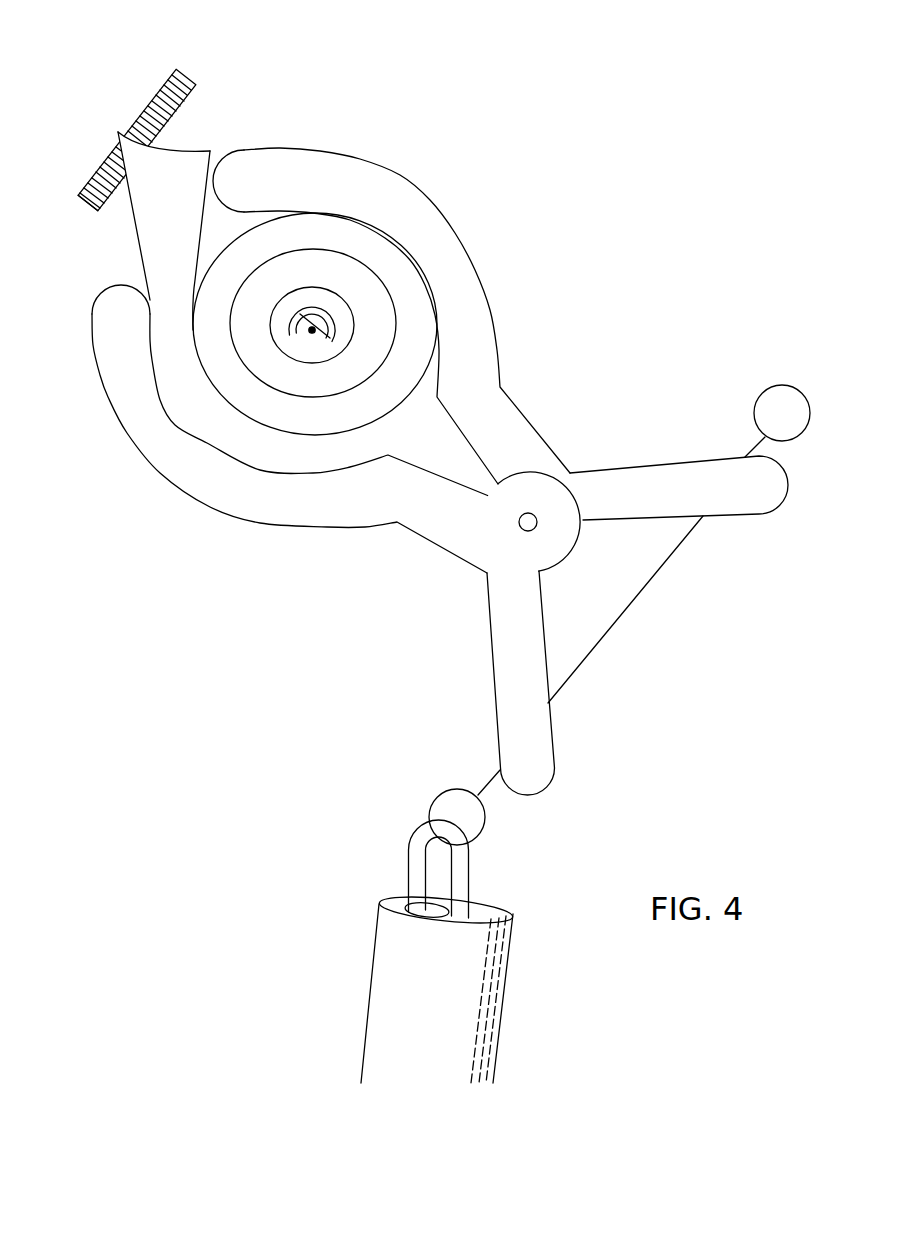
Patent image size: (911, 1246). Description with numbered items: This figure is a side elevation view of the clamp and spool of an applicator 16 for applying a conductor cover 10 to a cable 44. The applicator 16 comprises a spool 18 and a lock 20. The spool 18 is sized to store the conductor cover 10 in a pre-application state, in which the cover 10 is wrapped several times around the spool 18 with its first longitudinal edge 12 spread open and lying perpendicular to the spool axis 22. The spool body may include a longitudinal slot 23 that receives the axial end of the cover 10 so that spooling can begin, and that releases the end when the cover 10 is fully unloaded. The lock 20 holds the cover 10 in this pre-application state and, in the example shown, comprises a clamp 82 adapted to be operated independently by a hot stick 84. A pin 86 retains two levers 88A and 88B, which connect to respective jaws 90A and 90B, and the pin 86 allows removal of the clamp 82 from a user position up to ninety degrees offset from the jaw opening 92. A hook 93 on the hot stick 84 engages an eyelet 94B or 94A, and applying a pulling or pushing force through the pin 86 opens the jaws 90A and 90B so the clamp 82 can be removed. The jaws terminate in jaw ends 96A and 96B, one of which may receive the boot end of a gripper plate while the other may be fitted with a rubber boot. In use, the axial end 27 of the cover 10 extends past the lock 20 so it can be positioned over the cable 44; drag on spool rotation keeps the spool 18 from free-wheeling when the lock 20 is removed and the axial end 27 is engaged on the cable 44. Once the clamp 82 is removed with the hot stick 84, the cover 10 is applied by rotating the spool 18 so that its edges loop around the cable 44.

The conductor cover 10 is at (333, 338).
The first longitudinal edge 12 is at (302, 222).
The applicator 16 is at (588, 194).
The spool 18 is at (207, 426).
The longitudinal slot 23 is at (337, 343).
The lock 20 is at (422, 310).
The clamp 82 is at (503, 322).
The spool axis 22 is at (318, 322).
The axial end 27 is at (140, 130).
The cable 44 is at (103, 160).
The hot stick 84 is at (495, 1073).
The pin 86 is at (673, 553).
The lever 88A is at (687, 474).
The lever 88B is at (489, 614).
The jaw 90A is at (422, 316).
The jaw 90B is at (221, 508).
The jaw opening 92 is at (196, 243).
The hook 93 is at (407, 877).
The eyelet 94A is at (777, 385).
The eyelet 94B is at (487, 822).
The jaw end 96A is at (225, 160).
The jaw end 96B is at (126, 283).